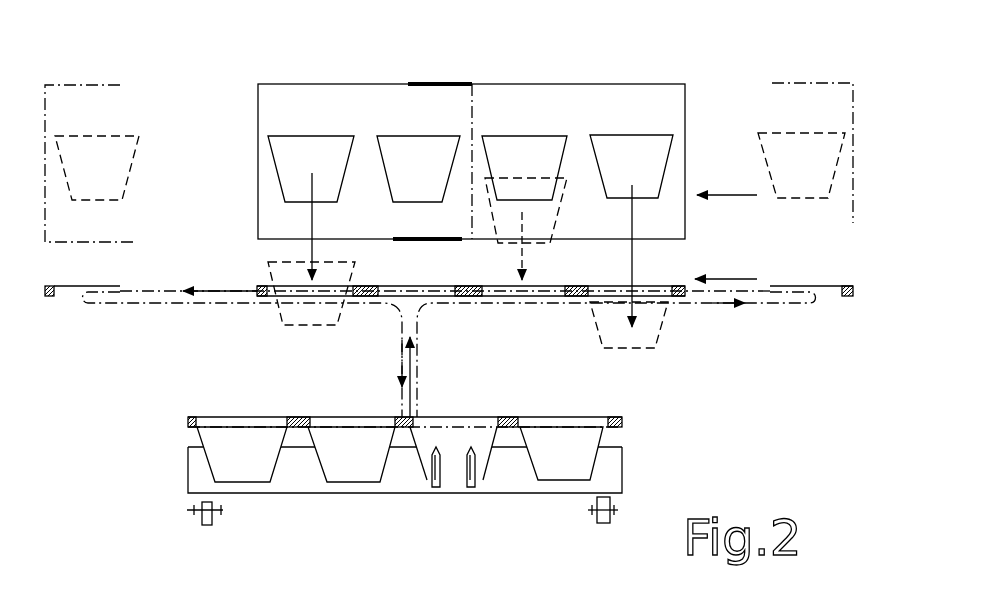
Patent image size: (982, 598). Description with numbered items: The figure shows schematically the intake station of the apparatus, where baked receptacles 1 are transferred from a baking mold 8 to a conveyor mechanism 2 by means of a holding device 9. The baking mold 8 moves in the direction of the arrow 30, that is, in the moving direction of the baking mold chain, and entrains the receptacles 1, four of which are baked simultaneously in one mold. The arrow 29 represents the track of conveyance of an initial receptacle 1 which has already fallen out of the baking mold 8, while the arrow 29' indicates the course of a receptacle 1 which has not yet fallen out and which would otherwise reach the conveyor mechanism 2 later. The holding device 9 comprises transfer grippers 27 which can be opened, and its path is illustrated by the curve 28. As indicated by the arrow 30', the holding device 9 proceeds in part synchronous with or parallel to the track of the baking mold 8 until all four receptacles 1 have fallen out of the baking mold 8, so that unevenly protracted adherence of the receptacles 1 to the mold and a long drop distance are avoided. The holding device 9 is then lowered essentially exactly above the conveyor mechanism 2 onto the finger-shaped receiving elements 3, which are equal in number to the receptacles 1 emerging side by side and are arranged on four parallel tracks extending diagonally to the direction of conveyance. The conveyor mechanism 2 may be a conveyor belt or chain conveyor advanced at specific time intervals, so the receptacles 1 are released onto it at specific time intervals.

The receptacles 1 is at (548, 143).
The conveyor mechanism 2 is at (287, 485).
The receiving elements 3 is at (430, 473).
The baking mold 8 is at (363, 103).
The holding device 9 is at (232, 280).
The transfer grippers 27 is at (295, 422).
The curve 28 is at (412, 340).
The arrow 29 is at (342, 249).
The arrow 29' is at (557, 263).
The arrow 30 is at (449, 162).
The arrow 30' is at (736, 252).